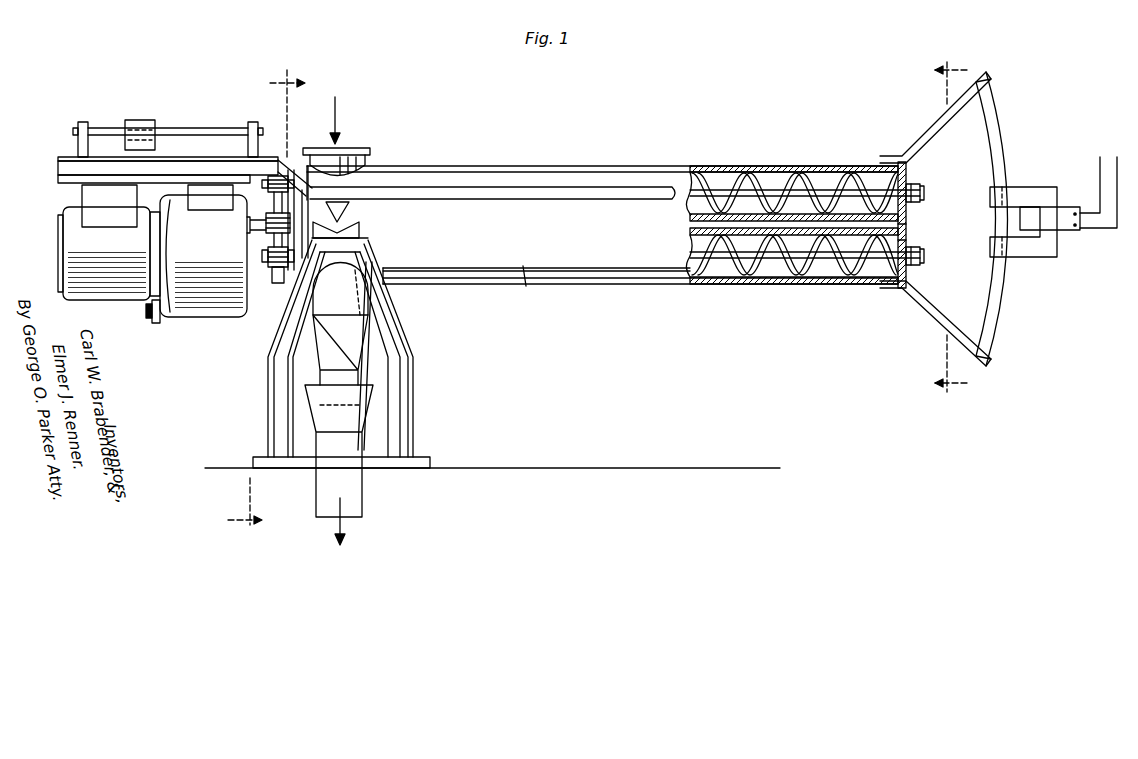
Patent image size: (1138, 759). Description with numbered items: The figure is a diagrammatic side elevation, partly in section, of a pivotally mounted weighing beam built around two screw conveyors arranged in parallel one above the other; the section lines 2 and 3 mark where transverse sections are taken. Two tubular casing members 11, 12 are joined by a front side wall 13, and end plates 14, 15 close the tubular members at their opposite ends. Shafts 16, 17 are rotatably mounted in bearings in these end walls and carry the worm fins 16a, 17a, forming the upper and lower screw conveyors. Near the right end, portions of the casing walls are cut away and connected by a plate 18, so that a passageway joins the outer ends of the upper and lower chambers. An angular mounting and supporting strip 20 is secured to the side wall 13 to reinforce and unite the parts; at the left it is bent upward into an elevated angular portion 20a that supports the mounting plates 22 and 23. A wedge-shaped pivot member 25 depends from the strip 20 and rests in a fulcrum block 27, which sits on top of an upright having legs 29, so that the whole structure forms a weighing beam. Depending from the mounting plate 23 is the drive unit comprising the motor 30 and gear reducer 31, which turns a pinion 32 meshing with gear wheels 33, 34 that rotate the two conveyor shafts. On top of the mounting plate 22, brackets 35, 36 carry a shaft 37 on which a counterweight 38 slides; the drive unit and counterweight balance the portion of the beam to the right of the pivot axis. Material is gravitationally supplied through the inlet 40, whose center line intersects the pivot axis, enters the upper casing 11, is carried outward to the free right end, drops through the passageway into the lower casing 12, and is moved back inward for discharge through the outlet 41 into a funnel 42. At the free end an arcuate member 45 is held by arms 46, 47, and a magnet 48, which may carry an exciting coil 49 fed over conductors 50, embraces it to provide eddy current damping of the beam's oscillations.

The section line 2- 2 is at (266, 301).
The section line 3- 3 is at (951, 227).
The tubular casing member 11 is at (524, 167).
The tubular casing member 12 is at (614, 284).
The side wall 13 is at (524, 286).
The end plate 14 is at (300, 152).
The end plate 15 is at (906, 220).
The shaft 16 is at (836, 190).
The worm fins 16a is at (796, 180).
The shaft 17 is at (816, 246).
The worm fins 17a is at (782, 262).
The plate 18 is at (906, 232).
The angular mounting and supporting strip 20 is at (445, 172).
The elevated angular portion 20a is at (168, 170).
The mounting plate 22 is at (98, 156).
The mounting plate 23 is at (62, 182).
The wedge-shaped pivot member 25 is at (350, 210).
The fulcrum block 27 is at (347, 230).
The legs 29 is at (270, 380).
The motor 30 is at (118, 290).
The gear reducer 31 is at (198, 298).
The pinion 32 is at (274, 230).
The gear wheel 33 is at (270, 203).
The gear wheel 34 is at (278, 283).
The bracket 35 is at (78, 124).
The bracket 36 is at (252, 122).
The shaft 37 is at (165, 128).
The counterweight 38 is at (140, 120).
The inlet 40 is at (348, 154).
The outlet 41 is at (366, 330).
The funnel 42 is at (366, 440).
The arcuate member 45 is at (994, 114).
The arm 46 is at (926, 140).
The arm 47 is at (924, 312).
The magnet 48 is at (1032, 188).
The exciting coil 49 is at (1068, 232).
The conductors 50 is at (1100, 158).